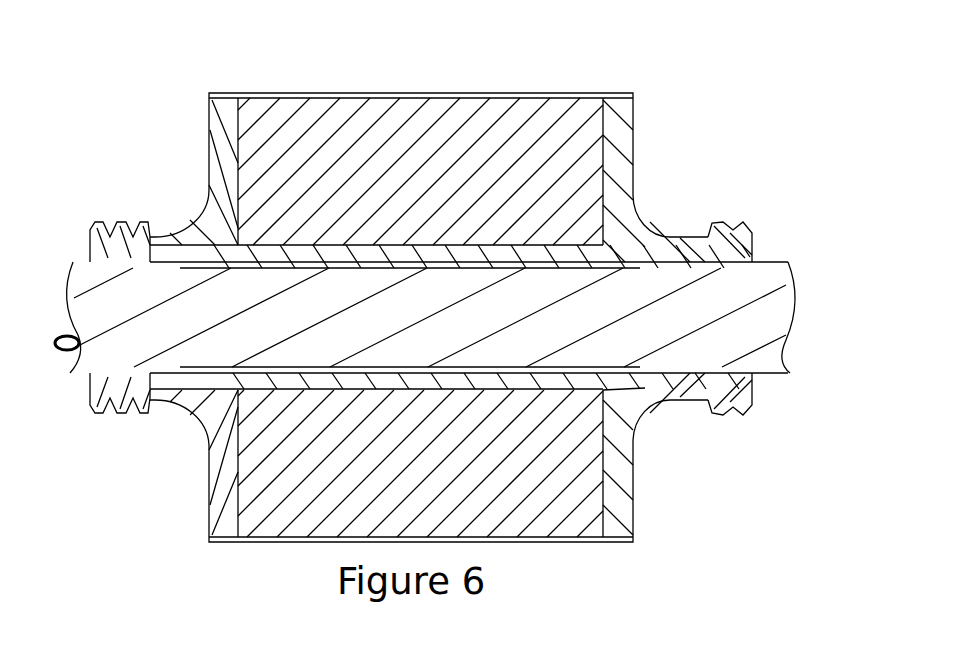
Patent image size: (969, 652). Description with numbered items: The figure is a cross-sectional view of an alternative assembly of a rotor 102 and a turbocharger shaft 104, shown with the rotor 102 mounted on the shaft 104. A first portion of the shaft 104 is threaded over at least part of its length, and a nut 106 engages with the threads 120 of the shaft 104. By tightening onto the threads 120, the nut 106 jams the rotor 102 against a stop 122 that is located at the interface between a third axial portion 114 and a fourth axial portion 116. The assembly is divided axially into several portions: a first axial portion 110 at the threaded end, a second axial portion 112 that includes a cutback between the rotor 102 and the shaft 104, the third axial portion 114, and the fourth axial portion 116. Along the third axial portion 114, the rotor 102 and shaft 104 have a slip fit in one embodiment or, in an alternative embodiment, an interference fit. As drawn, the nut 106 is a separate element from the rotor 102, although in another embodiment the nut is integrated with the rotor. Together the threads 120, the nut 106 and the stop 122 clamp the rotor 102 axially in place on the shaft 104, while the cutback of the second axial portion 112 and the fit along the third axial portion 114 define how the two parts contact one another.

The rotor 102 is at (658, 169).
The shaft 104 is at (445, 327).
The nut 106 is at (126, 240).
The first axial length 110 is at (33, 45).
The second axial portion 112 is at (642, 45).
The third axial portion 114 is at (652, 13).
The fourth axial portion 116 is at (800, 15).
The threads 120 is at (98, 263).
The stop 122 is at (755, 260).